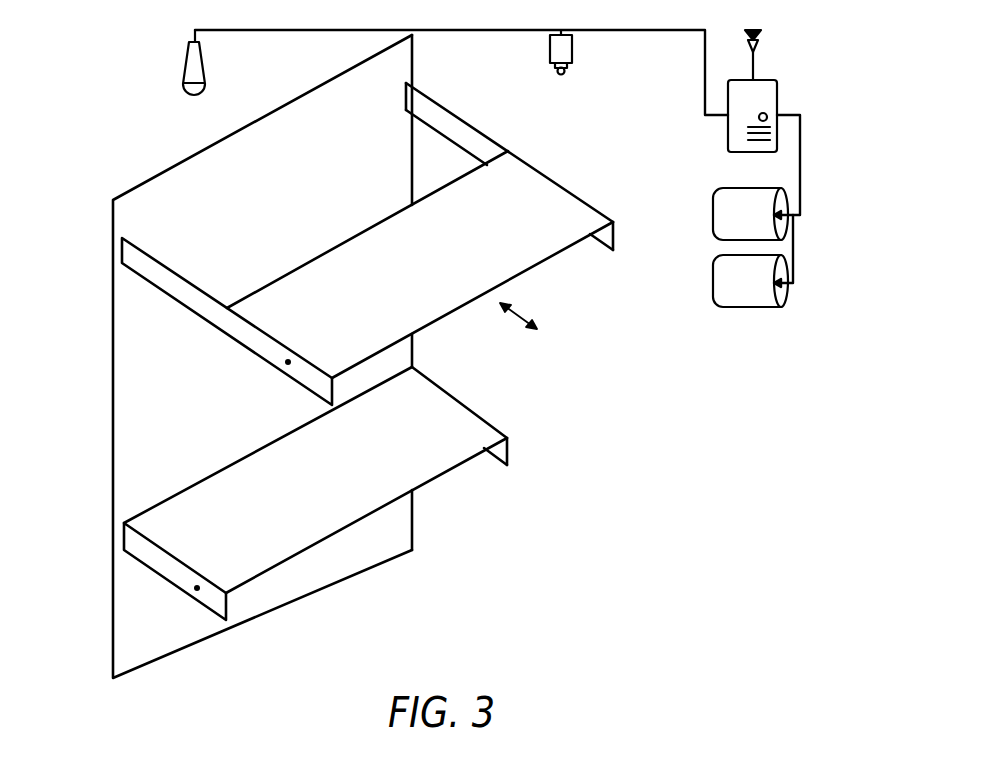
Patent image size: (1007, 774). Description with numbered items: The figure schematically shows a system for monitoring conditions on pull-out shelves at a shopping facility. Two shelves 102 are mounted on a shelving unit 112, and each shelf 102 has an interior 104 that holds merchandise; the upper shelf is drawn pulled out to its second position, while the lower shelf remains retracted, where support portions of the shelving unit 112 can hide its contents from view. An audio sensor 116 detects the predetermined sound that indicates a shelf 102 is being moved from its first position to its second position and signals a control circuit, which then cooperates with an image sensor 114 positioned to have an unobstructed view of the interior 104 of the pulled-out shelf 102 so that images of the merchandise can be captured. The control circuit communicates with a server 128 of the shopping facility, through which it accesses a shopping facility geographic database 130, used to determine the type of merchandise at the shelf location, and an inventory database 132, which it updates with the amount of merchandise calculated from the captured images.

The shelf 102 is at (428, 482).
The interior 104 is at (538, 245).
The shelving unit 112 is at (112, 427).
The image sensor 114 is at (548, 53).
The audio sensor 116 is at (182, 88).
The server 128 is at (777, 80).
The shopping facility geographic database 130 is at (710, 215).
The inventory database 132 is at (710, 284).